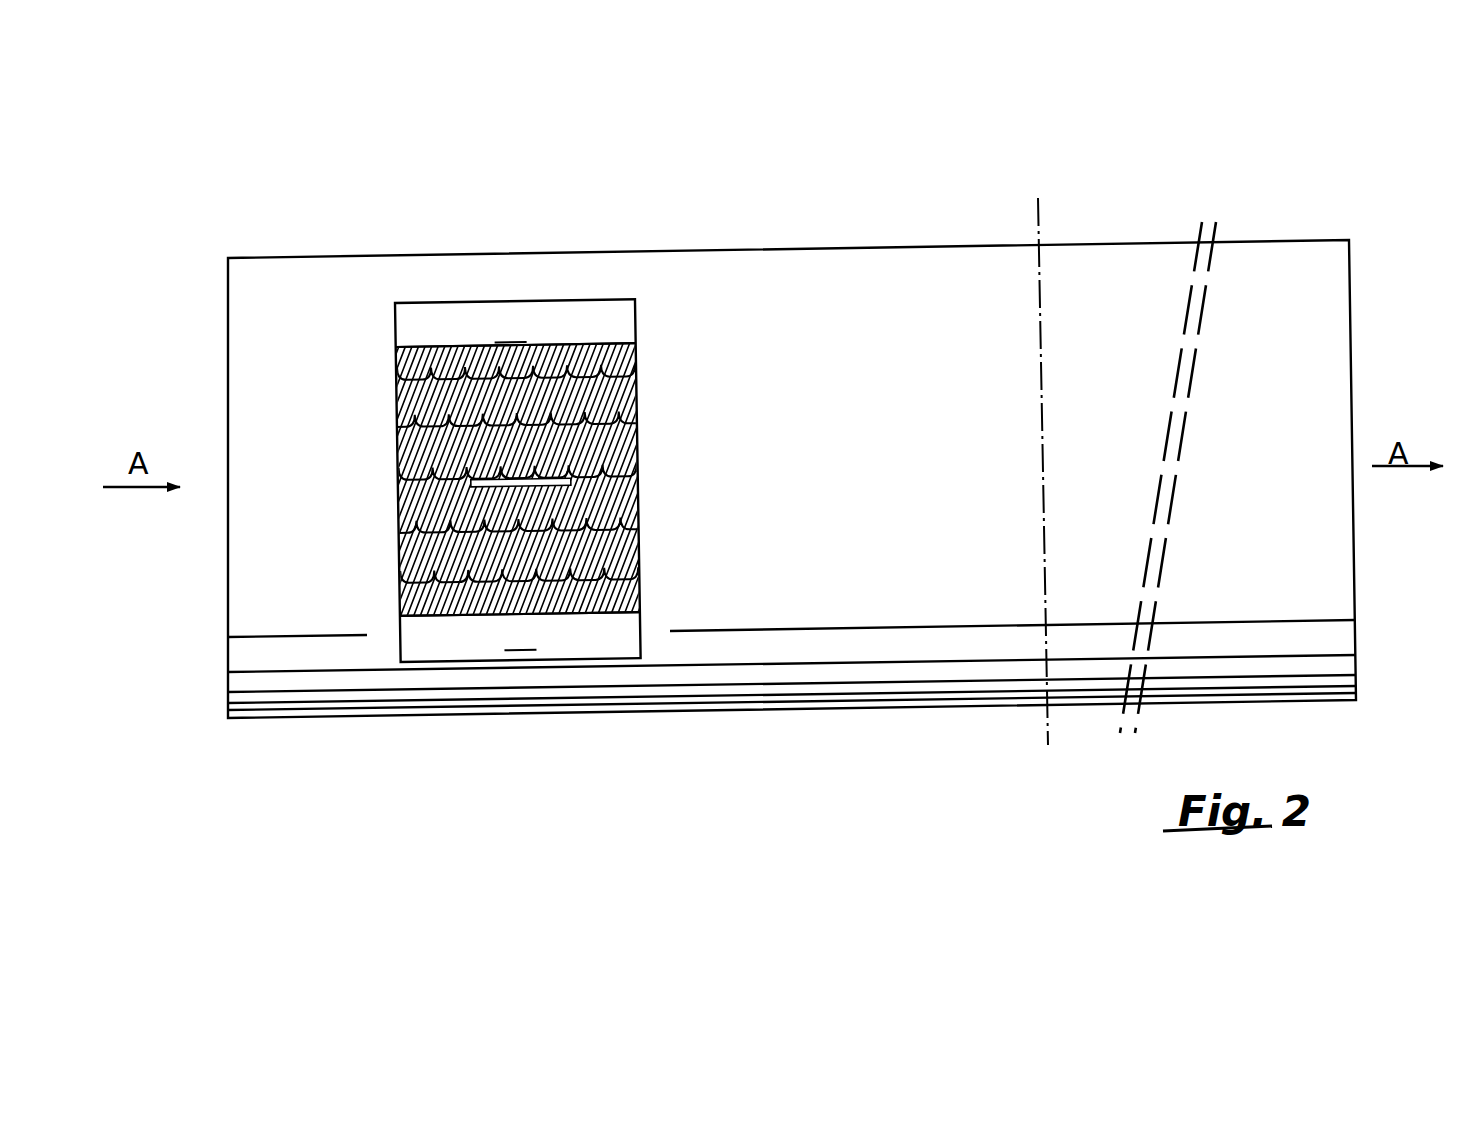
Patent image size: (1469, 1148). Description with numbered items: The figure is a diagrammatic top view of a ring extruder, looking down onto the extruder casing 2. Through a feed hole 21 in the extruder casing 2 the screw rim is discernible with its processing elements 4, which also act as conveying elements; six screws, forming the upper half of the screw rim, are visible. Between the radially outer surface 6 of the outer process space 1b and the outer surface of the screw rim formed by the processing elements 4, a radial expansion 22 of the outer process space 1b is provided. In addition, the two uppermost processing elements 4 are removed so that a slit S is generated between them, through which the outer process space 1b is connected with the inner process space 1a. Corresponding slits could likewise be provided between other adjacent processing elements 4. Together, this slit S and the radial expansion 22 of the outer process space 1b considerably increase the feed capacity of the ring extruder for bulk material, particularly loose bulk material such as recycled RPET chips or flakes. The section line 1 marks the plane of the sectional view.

The extruder casing 2 is at (1298, 268).
The section line 1- 1 is at (1022, 212).
The feed hole 21 is at (597, 330).
The radial expansion 22 is at (445, 325).
The radially outer surface 6 is at (548, 305).
The outer process space 1b is at (516, 483).
The processing elements 4 is at (397, 372).
The inner process space 1a is at (537, 470).